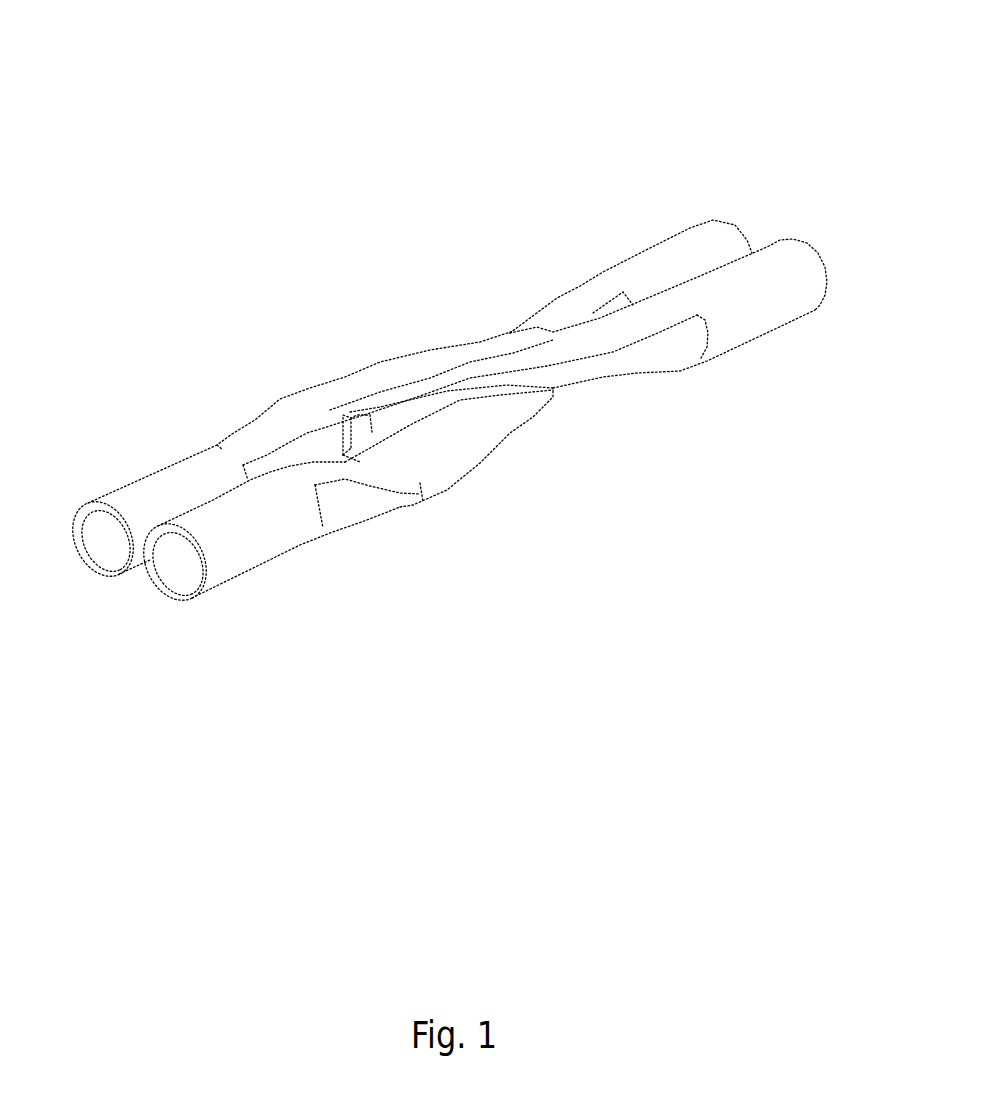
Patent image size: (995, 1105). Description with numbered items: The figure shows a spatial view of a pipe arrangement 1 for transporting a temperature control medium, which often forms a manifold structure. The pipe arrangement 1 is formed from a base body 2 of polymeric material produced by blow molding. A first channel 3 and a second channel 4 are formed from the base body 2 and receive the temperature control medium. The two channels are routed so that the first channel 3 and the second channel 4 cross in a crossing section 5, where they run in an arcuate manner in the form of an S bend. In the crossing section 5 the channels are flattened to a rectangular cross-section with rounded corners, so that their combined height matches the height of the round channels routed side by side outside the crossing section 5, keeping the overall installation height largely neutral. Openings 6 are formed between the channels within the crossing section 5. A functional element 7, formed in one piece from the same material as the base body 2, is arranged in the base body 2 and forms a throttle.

The pipe arrangement 1 is at (330, 161).
The base body 2 is at (283, 506).
The first channel 3 is at (186, 480).
The second channel 4 is at (243, 545).
The crossing section 5 is at (527, 503).
The openings 6 is at (339, 452).
The functional element 7 is at (736, 303).